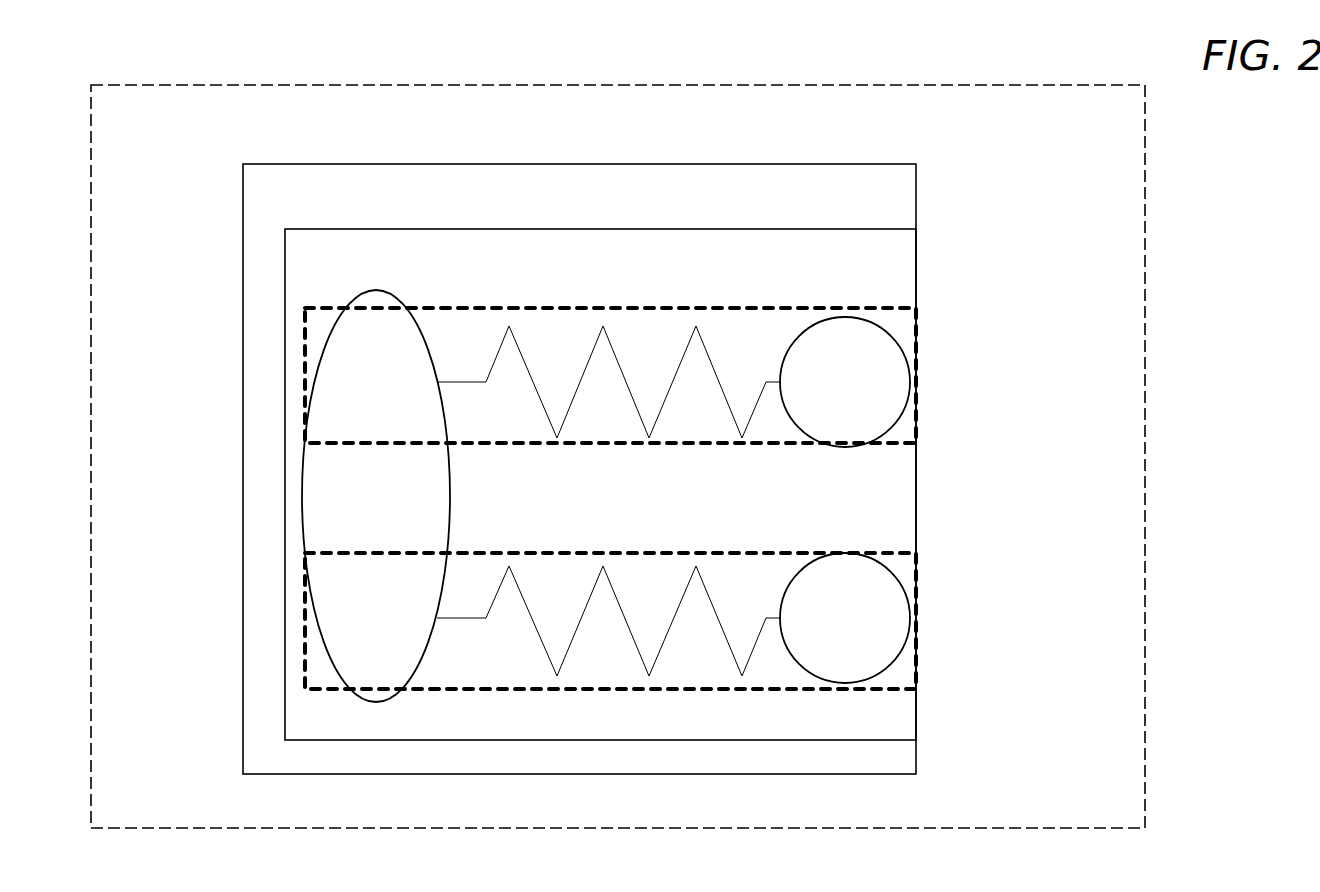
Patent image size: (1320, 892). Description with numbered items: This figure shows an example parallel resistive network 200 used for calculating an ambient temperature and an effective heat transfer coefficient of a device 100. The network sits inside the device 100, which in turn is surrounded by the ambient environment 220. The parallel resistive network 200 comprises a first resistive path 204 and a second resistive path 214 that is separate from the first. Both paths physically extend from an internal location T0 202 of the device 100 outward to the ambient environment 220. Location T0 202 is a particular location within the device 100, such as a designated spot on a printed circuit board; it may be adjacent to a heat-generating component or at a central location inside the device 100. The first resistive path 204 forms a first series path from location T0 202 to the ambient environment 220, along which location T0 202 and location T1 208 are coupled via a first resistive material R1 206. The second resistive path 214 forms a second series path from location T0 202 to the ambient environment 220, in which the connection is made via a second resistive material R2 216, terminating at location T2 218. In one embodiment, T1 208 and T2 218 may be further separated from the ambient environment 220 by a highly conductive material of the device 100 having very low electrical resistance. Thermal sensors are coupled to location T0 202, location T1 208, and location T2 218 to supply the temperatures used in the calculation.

The ambient environment 220 is at (702, 116).
The device 100 is at (616, 195).
The parallel resistive network 200 is at (698, 260).
The first resistive path 204 is at (1107, 287).
The second resistive path 214 is at (1122, 723).
The location T0 202 is at (363, 520).
The first resistive material R1 206 is at (730, 489).
The second resistive material R2 216 is at (737, 728).
The location T1 208 is at (833, 405).
The location T2 218 is at (833, 645).